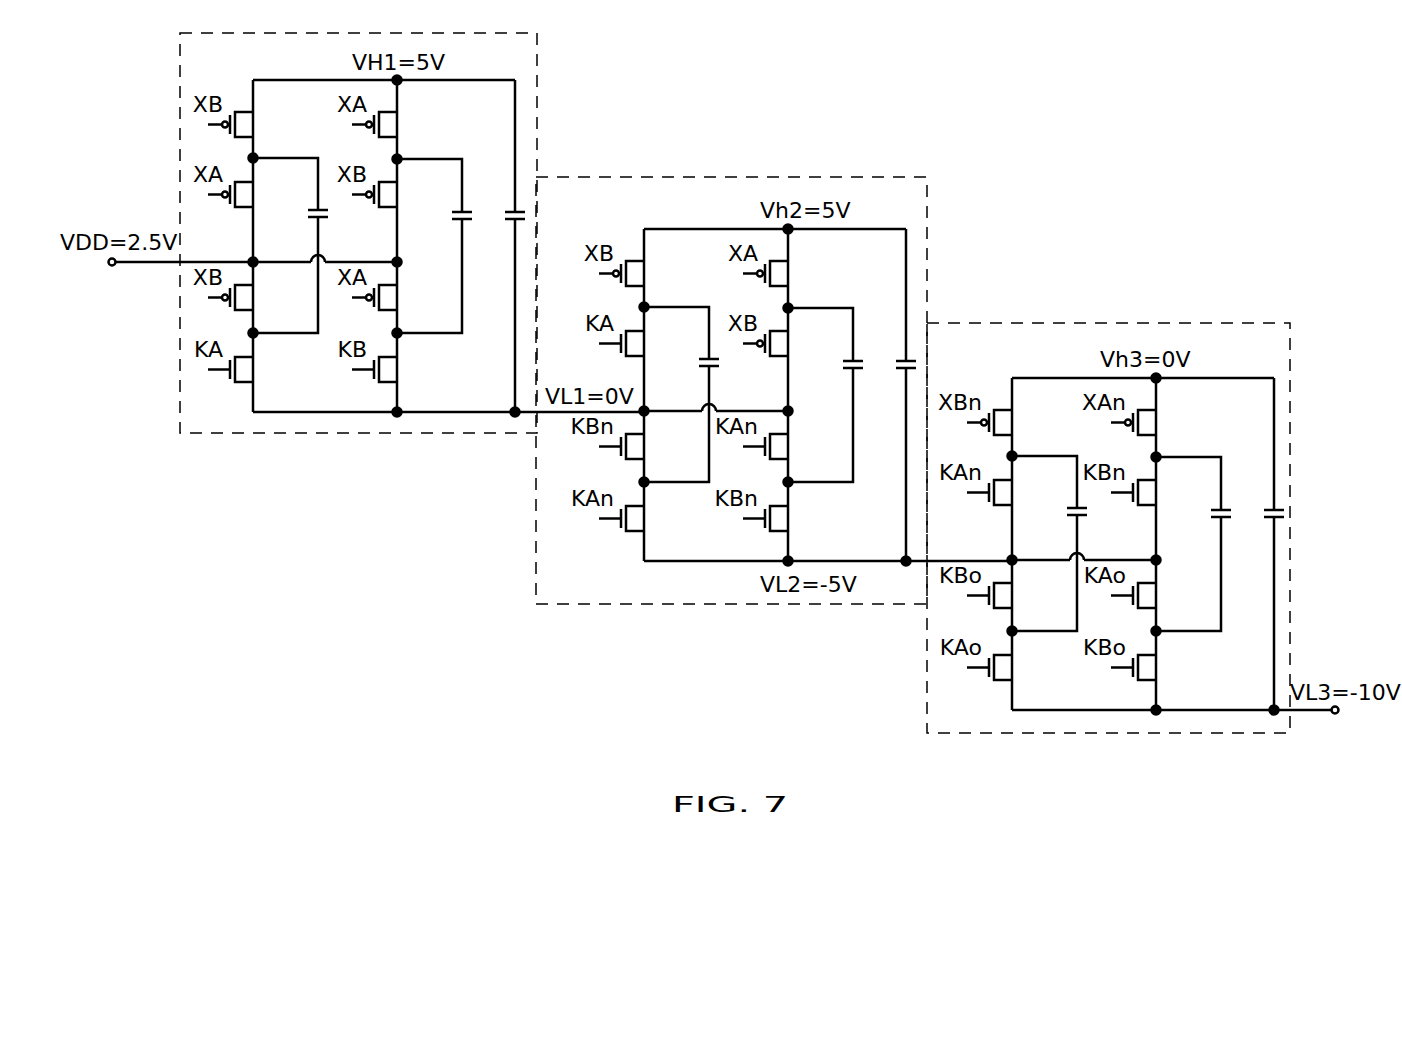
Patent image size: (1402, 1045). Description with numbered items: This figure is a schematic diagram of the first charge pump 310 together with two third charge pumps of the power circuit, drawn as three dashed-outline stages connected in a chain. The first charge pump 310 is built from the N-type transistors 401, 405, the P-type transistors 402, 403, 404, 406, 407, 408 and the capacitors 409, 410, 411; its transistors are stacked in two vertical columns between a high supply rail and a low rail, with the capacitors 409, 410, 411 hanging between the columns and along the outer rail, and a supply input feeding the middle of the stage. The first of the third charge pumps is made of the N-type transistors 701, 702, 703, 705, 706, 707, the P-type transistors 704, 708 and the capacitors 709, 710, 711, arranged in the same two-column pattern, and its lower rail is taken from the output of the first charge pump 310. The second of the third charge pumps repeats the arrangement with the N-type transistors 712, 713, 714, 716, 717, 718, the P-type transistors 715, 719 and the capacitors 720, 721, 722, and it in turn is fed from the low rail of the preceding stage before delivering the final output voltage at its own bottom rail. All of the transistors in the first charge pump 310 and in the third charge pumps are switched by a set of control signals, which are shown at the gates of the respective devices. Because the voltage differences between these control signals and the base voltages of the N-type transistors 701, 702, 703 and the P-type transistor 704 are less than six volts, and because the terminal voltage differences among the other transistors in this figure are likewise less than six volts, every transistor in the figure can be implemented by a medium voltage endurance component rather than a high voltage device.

The first charge pump 310 is at (285, 433).
The N-type transistor 401 is at (255, 373).
The P-type transistor 402 is at (255, 301).
The P-type transistor 403 is at (255, 198).
The P-type transistor 404 is at (255, 128).
The N-type transistor 405 is at (399, 373).
The P-type transistor 406 is at (399, 301).
The P-type transistor 407 is at (399, 198).
The P-type transistor 408 is at (399, 128).
The capacitor 409 is at (322, 219).
The capacitor 410 is at (458, 221).
The capacitor 411 is at (506, 209).
The N-type transistor 701 is at (646, 522).
The N-type transistor 702 is at (646, 450).
The N-type transistor 703 is at (646, 347).
The P-type transistor 704 is at (646, 277).
The N-type transistor 705 is at (790, 522).
The N-type transistor 706 is at (790, 450).
The N-type transistor 707 is at (790, 347).
The P-type transistor 708 is at (790, 277).
The capacitor 709 is at (732, 380).
The capacitor 710 is at (831, 380).
The capacitor 711 is at (886, 348).
The N-type transistor 712 is at (1014, 671).
The N-type transistor 713 is at (1014, 599).
The N-type transistor 714 is at (1014, 496).
The P-type transistor 715 is at (1014, 426).
The N-type transistor 716 is at (1158, 671).
The N-type transistor 717 is at (1158, 599).
The N-type transistor 718 is at (1158, 496).
The P-type transistor 719 is at (1158, 426).
The capacitor 720 is at (1100, 529).
The capacitor 721 is at (1199, 529).
The capacitor 722 is at (1254, 497).